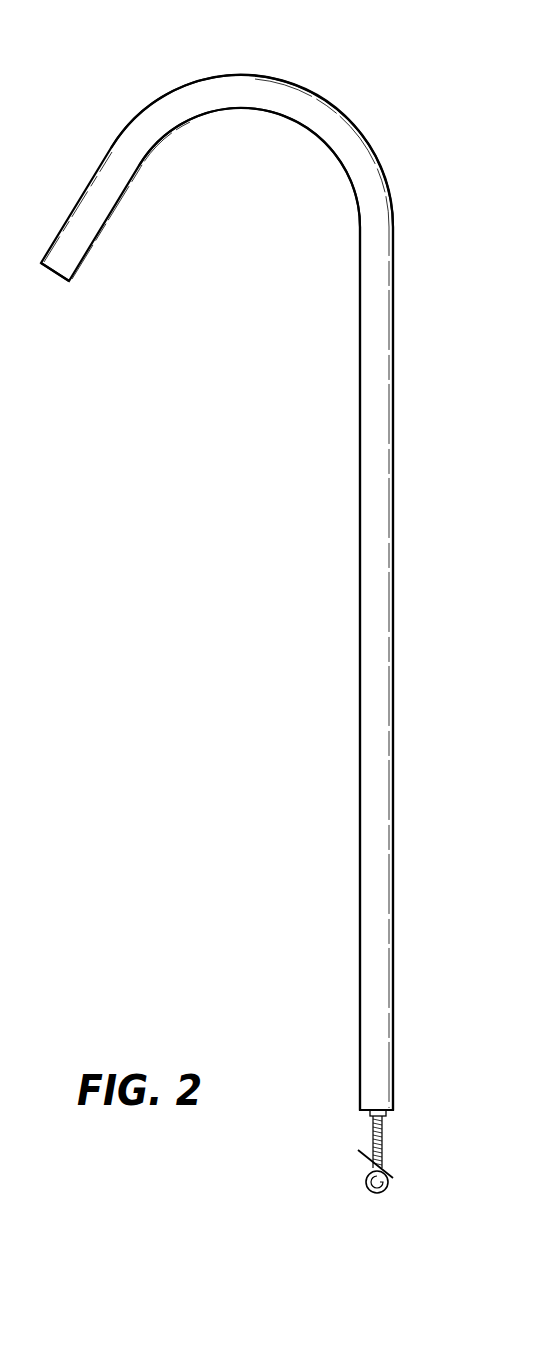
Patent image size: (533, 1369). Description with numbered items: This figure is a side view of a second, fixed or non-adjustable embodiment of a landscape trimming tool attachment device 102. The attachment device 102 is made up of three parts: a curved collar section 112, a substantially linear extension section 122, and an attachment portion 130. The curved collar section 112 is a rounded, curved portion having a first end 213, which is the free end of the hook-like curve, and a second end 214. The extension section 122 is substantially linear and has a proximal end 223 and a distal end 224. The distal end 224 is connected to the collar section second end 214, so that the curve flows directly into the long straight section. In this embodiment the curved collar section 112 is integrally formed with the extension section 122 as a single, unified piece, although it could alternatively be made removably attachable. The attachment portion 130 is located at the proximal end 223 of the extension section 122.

The landscape trimming tool attachment device 102 is at (333, 472).
The curved collar section 112 is at (153, 112).
The first end 213 is at (57, 281).
The second end 214 is at (394, 212).
The distal end 224 is at (394, 245).
The extension section 122 is at (394, 682).
The proximal end 223 is at (361, 1113).
The attachment portion 130 is at (410, 1103).